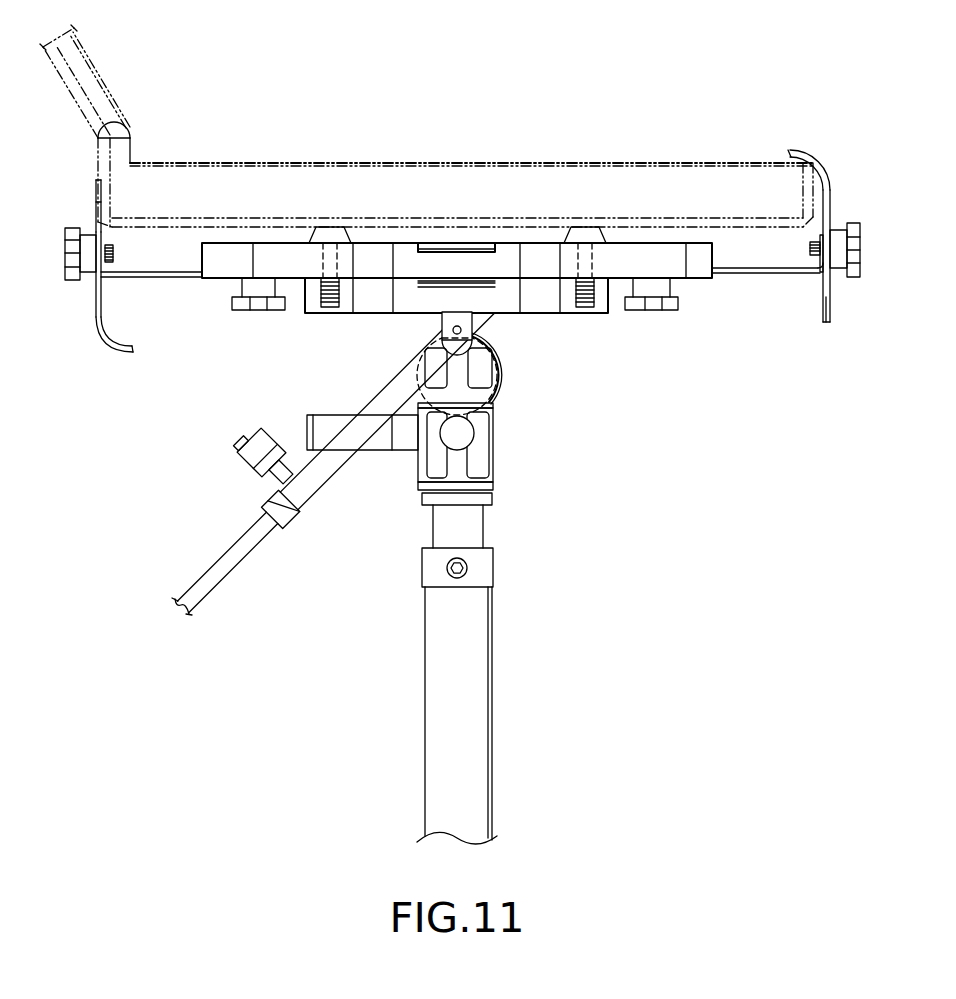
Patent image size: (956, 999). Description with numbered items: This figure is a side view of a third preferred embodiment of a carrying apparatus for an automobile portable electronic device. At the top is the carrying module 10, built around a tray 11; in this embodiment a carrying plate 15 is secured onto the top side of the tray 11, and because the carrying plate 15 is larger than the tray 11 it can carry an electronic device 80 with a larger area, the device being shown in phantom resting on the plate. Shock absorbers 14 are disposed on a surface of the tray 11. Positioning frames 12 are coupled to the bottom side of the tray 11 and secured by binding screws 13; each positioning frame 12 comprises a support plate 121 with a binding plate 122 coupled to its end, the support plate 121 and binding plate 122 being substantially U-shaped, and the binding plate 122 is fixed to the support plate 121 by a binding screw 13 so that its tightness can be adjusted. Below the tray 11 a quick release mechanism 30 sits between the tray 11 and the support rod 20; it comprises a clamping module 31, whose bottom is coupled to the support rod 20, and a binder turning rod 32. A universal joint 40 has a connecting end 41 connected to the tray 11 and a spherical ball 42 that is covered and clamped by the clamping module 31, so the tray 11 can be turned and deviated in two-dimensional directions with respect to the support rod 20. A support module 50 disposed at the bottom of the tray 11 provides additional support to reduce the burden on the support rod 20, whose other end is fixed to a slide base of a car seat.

The carrying module 10 is at (457, 249).
The tray 11 is at (540, 303).
The positioning frame 12 is at (134, 262).
The support plate 121 is at (170, 277).
The binding plate 122 is at (100, 220).
The binding screw 13 is at (70, 258).
The shock absorber 14 is at (328, 235).
The carrying plate 15 is at (722, 260).
The support rod 20 is at (505, 748).
The quick release mechanism 30 is at (454, 495).
The clamping module 31 is at (410, 477).
The binder turning rod 32 is at (298, 423).
The universal joint 40 is at (507, 385).
The connecting end 41 is at (475, 320).
The spherical ball 42 is at (482, 397).
The support module 50 is at (226, 531).
The electronic device 80 is at (478, 182).